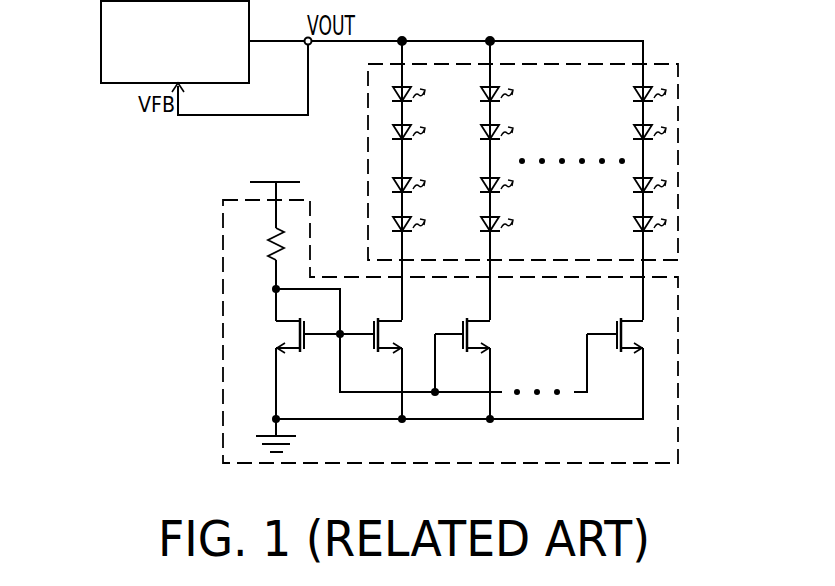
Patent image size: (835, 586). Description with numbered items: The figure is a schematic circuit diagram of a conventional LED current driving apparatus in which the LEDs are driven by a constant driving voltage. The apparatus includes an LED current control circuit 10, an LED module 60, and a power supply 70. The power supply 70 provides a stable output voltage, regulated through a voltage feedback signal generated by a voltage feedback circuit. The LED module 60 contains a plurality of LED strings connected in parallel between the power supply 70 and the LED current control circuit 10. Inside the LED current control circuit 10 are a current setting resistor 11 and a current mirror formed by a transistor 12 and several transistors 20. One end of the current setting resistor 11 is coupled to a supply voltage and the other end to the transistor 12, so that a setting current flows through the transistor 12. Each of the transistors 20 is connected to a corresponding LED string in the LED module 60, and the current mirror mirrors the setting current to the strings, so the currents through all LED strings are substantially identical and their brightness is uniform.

The power supply 70 is at (101, 49).
The LED module 60 is at (672, 144).
The LED current control circuit 10 is at (476, 305).
The current setting resistor 11 is at (270, 240).
The transistor 12 is at (284, 339).
The transistors 20 is at (398, 330).